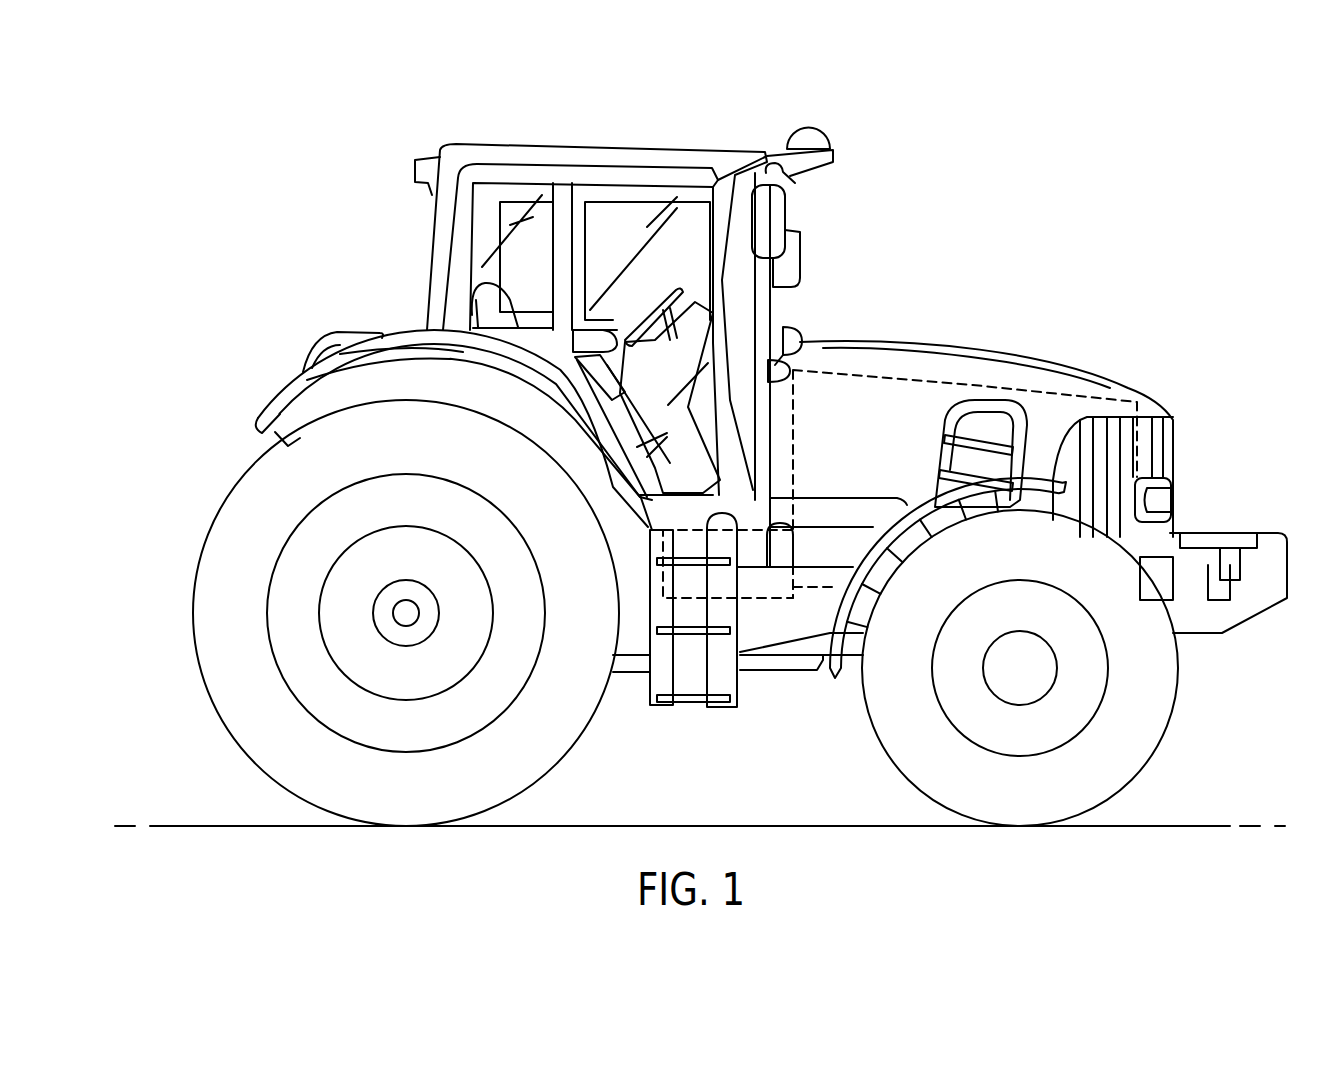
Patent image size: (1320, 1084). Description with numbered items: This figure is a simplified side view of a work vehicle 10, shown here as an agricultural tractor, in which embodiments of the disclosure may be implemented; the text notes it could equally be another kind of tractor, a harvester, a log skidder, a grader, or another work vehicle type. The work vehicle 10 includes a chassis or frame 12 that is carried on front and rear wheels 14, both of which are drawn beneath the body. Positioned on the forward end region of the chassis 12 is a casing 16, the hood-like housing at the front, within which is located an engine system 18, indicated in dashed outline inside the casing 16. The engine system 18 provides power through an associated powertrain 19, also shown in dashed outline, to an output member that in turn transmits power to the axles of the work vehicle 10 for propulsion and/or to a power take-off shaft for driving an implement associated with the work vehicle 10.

The work vehicle 10 is at (354, 128).
The chassis or frame 12 is at (634, 684).
The front and rear wheels 14 is at (404, 611).
The casing 16 is at (1072, 370).
The engine system 18 is at (973, 383).
The powertrain 19 is at (787, 605).